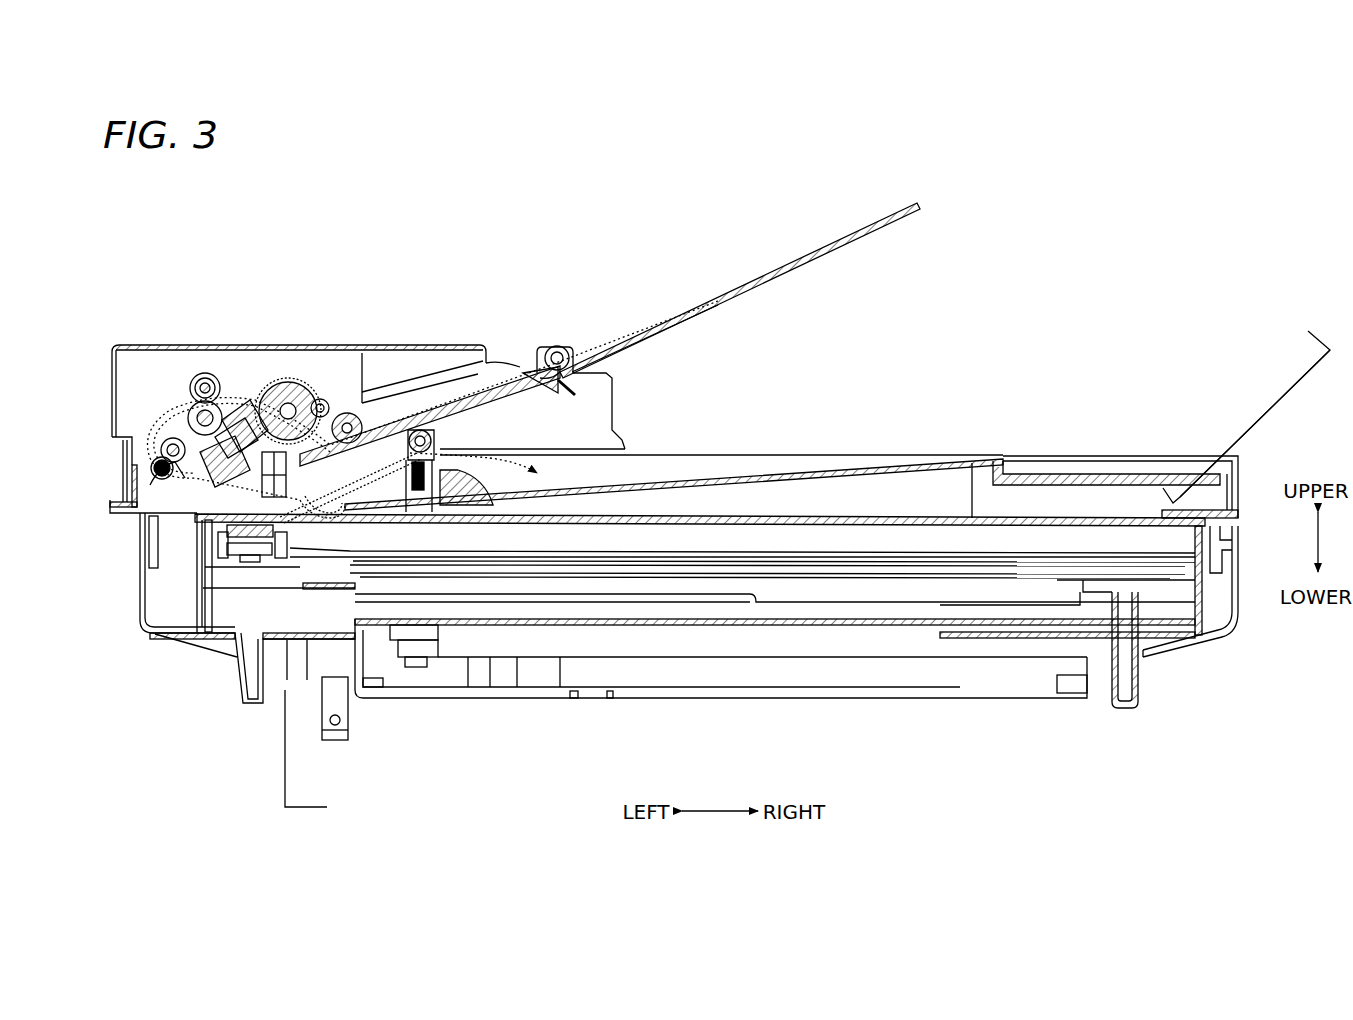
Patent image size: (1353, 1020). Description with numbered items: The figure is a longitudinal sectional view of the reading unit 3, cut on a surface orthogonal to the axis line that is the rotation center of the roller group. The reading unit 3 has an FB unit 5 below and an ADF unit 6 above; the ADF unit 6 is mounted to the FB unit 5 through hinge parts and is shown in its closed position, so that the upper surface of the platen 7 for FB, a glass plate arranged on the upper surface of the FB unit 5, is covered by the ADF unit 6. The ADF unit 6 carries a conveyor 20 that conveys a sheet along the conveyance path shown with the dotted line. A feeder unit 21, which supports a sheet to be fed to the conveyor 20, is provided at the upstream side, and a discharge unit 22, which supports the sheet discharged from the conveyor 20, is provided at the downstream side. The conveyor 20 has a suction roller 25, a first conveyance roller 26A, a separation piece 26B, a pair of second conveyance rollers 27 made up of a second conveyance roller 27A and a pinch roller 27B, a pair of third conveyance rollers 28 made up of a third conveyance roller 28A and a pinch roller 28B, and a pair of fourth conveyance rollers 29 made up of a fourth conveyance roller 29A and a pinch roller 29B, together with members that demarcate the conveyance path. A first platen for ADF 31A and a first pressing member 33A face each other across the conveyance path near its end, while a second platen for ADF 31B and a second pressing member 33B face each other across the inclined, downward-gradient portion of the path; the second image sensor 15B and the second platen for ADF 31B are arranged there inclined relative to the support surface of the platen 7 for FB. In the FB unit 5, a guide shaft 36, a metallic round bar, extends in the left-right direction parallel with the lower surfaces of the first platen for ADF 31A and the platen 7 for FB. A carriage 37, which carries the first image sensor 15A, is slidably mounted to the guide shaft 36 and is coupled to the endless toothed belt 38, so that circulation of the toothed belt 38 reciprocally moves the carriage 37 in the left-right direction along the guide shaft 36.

The reading unit 3 is at (957, 300).
The FB unit 5 is at (1238, 590).
The ADF unit 6 is at (1238, 494).
The platen for FB 7 is at (1105, 516).
The first image sensor 15A is at (250, 562).
The second image sensor 15B is at (185, 478).
The conveyor 20 is at (311, 270).
The feeder unit 21 is at (612, 350).
The discharge unit 22 is at (640, 484).
The suction roller 25 is at (350, 412).
The first conveyance roller 26A is at (297, 385).
The separation piece 26B is at (262, 417).
The pair of second conveyance rollers 27 is at (292, 250).
The second conveyance roller 27A is at (242, 420).
The pinch roller 27B is at (210, 384).
The pair of third conveyance rollers 28 is at (208, 300).
The third conveyance roller 28A is at (172, 438).
The pinch roller 28B is at (155, 463).
The pair of fourth conveyance rollers 29 is at (420, 300).
The fourth conveyance roller 29A is at (428, 440).
The pinch roller 29B is at (440, 470).
The first platen for ADF 31A is at (205, 530).
The second platen for ADF 31B is at (215, 482).
The first pressing member 33A is at (318, 520).
The second pressing member 33B is at (190, 500).
The guide shaft 36 is at (636, 568).
The carriage 37 is at (262, 545).
The toothed belt 38 is at (518, 576).